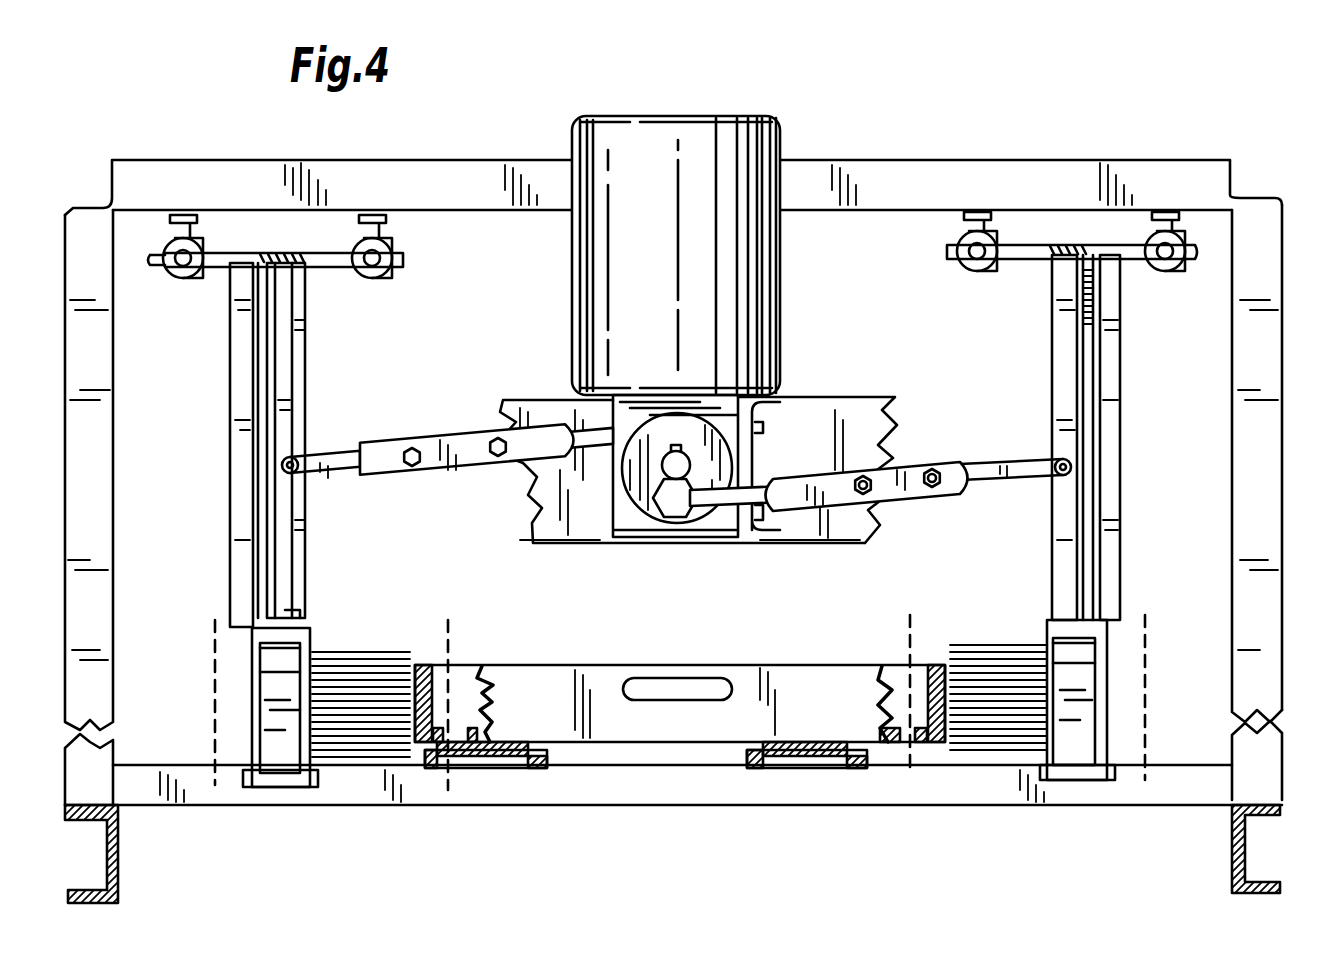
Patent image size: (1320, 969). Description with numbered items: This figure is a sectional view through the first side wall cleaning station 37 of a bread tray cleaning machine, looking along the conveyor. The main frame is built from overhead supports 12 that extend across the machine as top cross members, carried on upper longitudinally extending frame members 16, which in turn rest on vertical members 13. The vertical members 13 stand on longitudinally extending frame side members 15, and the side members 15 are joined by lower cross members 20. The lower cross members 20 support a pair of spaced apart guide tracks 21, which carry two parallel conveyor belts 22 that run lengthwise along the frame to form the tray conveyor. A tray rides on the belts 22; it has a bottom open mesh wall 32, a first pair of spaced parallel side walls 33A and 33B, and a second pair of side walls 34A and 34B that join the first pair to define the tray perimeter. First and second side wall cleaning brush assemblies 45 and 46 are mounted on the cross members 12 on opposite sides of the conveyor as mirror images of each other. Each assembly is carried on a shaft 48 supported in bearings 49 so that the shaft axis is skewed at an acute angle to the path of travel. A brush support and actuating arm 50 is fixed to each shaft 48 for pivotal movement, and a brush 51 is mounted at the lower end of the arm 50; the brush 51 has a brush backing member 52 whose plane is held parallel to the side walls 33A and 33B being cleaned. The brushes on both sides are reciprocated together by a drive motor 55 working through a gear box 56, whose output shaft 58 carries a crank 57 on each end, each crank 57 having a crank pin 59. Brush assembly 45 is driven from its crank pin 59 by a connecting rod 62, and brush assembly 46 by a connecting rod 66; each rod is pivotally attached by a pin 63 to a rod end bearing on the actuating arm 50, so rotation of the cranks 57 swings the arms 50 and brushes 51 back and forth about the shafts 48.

The overhead supports 12 is at (1108, 160).
The vertical members 13 is at (106, 490).
The frame side members 15 is at (120, 860).
The upper longitudinally extending frame members 16 is at (1240, 198).
The lower cross members 20 is at (772, 790).
The guide tracks 21 is at (550, 760).
The conveyor belts 22 is at (510, 745).
The bottom open mesh wall 32 is at (480, 700).
The side wall 33A is at (432, 672).
The side wall 33B is at (930, 668).
The side wall 34A is at (616, 668).
The side wall 34B is at (898, 668).
The side wall cleaning station 37 is at (800, 238).
The first side wall cleaning brush assembly 45 is at (342, 288).
The second side wall cleaning brush assembly 46 is at (1035, 280).
The shaft 48 is at (400, 260).
The bearings 49 is at (378, 240).
The brush support and actuating arm 50 is at (312, 395).
The brush 51 is at (302, 640).
The brush backing member 52 is at (360, 745).
The drive motor 55 is at (770, 304).
The gear box 56 is at (628, 528).
The crank 57 is at (722, 462).
The gear box output shaft 58 is at (662, 458).
The crank pin 59 is at (681, 520).
The connecting rod 62 is at (430, 462).
The pin 63 is at (296, 462).
The connecting rod 66 is at (968, 468).